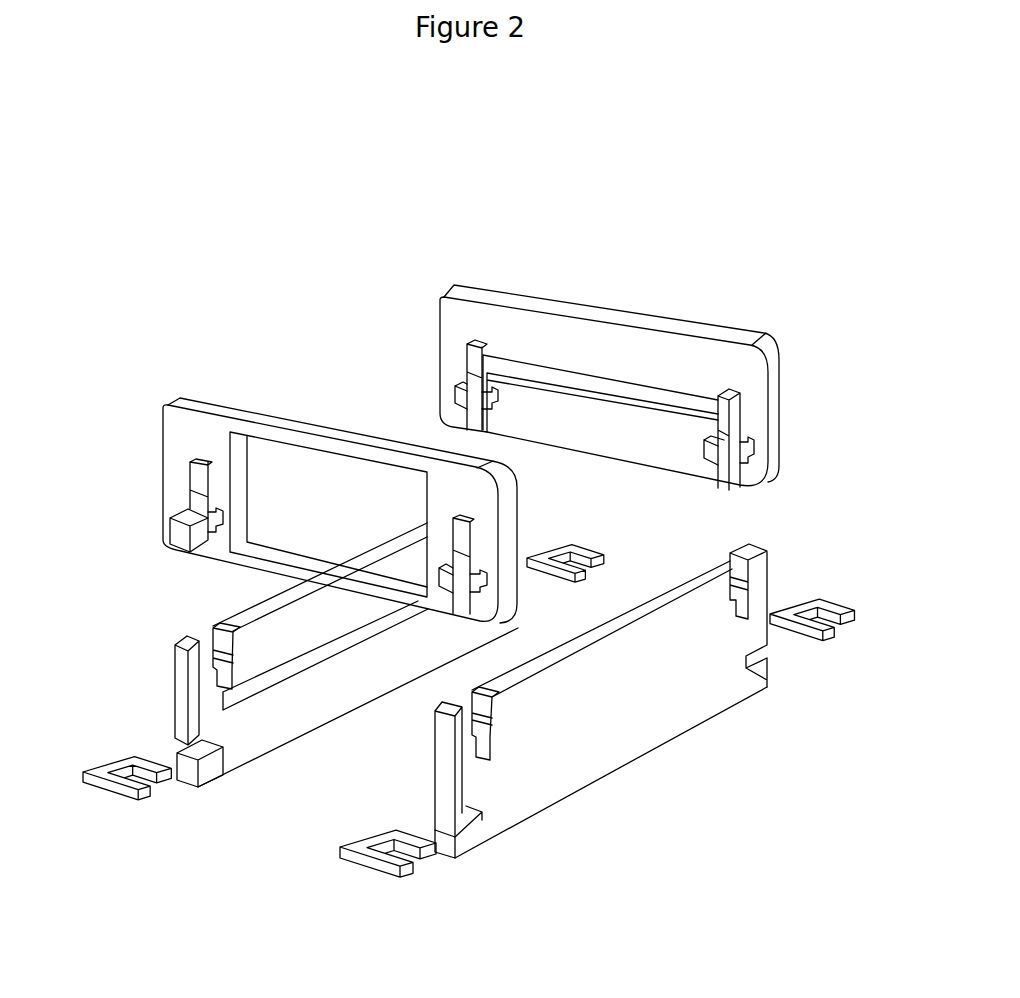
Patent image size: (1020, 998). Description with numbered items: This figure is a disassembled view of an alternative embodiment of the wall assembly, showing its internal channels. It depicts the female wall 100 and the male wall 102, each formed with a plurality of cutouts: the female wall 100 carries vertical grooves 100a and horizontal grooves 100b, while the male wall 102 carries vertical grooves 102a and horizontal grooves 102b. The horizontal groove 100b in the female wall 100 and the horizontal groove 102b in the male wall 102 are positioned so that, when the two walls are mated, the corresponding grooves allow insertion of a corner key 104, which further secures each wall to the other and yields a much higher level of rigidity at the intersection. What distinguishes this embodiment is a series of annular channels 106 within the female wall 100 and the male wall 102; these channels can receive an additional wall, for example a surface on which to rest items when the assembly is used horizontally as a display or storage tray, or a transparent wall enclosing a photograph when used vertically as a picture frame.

The female wall 100 is at (589, 393).
The vertical grooves 100a is at (465, 351).
The horizontal grooves 100b is at (176, 516).
The male wall 102 is at (609, 695).
The vertical grooves 102a is at (758, 562).
The horizontal grooves 102b is at (424, 811).
The corner key 104 is at (403, 864).
The annular channels 106 is at (698, 423).